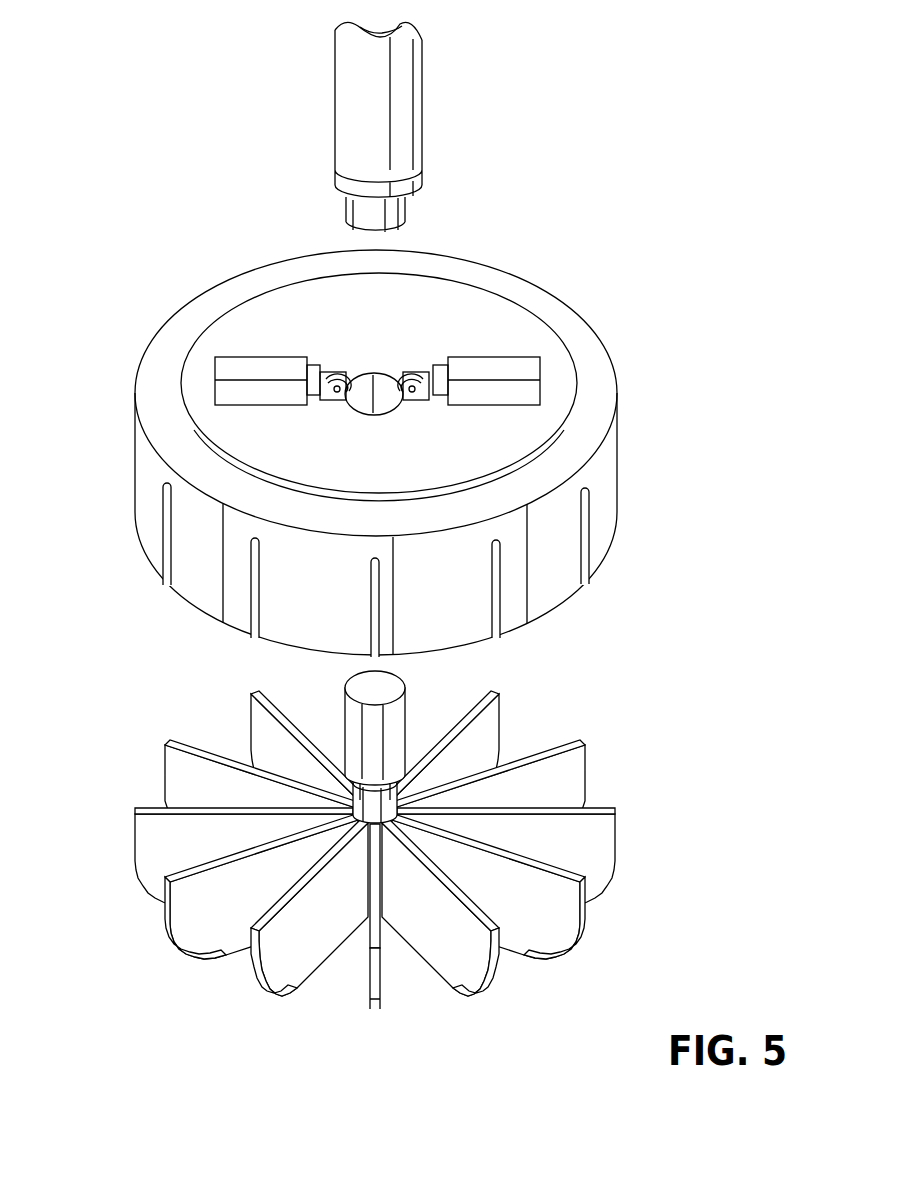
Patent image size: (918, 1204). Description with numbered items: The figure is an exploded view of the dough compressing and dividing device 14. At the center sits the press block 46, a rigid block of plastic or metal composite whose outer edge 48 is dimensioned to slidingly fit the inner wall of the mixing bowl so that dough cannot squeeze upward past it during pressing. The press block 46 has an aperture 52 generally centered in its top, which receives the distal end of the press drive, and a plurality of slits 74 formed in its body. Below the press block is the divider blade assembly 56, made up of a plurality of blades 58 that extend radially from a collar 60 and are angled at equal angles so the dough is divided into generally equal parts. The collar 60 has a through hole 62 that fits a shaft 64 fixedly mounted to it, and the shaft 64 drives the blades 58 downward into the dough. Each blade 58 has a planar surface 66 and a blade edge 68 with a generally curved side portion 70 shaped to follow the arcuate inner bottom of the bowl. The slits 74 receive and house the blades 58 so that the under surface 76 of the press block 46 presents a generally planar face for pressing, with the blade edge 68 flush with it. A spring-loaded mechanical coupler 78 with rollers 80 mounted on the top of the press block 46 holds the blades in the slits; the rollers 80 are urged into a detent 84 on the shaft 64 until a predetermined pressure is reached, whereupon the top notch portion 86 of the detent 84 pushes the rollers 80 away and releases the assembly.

The dough compressing and dividing device 14 is at (590, 101).
The press block 46 is at (395, 446).
The outer edge 48 is at (395, 454).
The aperture 52 is at (385, 378).
The divider blade assembly 56 is at (373, 841).
The blades 58 is at (381, 841).
The collar 60 is at (420, 795).
The through hole 62 is at (353, 805).
The shaft 64 is at (337, 120).
The planar surface 66 is at (595, 850).
The blade edge 68 is at (500, 708).
The side portion 70 is at (570, 960).
The slits 74 is at (590, 570).
The under surface 76 is at (206, 625).
The mechanical coupler 78 is at (293, 344).
The rollers 80 is at (336, 372).
The detent 84 is at (436, 212).
The top notch portion 86 is at (423, 178).